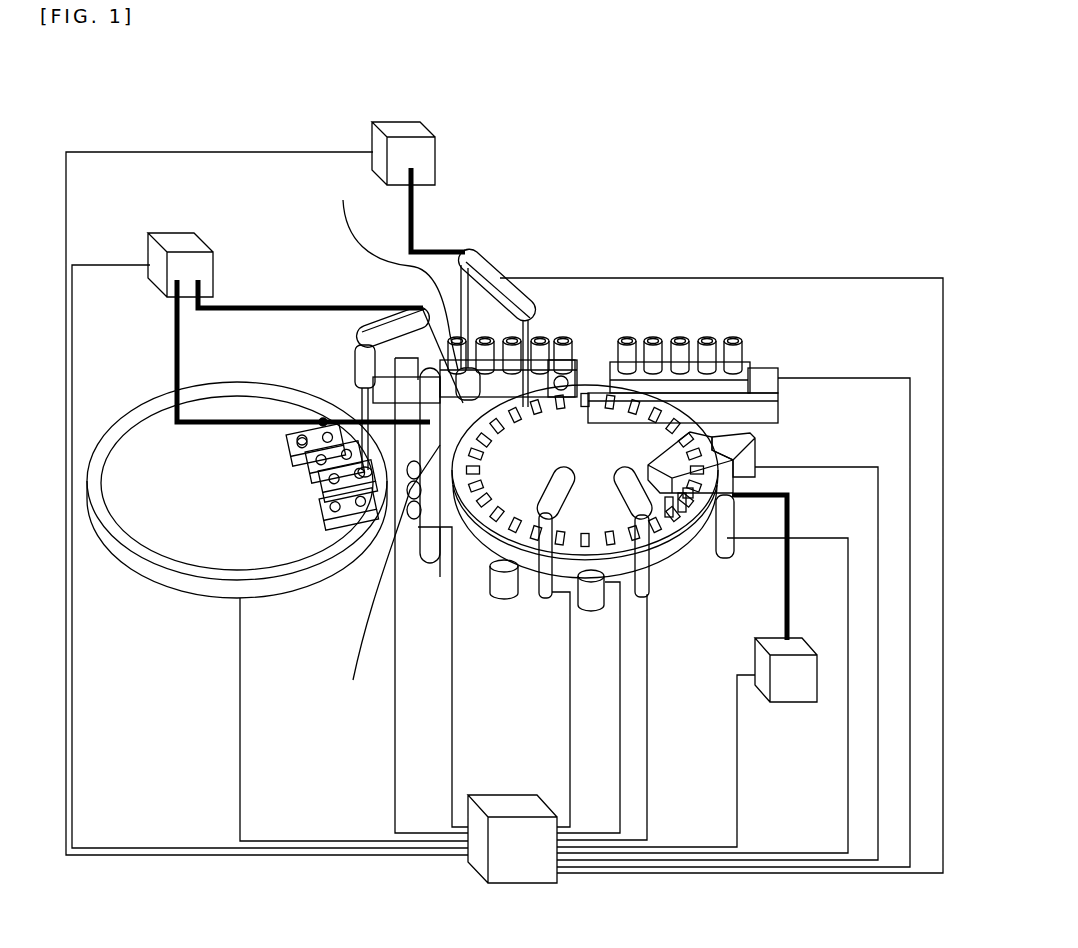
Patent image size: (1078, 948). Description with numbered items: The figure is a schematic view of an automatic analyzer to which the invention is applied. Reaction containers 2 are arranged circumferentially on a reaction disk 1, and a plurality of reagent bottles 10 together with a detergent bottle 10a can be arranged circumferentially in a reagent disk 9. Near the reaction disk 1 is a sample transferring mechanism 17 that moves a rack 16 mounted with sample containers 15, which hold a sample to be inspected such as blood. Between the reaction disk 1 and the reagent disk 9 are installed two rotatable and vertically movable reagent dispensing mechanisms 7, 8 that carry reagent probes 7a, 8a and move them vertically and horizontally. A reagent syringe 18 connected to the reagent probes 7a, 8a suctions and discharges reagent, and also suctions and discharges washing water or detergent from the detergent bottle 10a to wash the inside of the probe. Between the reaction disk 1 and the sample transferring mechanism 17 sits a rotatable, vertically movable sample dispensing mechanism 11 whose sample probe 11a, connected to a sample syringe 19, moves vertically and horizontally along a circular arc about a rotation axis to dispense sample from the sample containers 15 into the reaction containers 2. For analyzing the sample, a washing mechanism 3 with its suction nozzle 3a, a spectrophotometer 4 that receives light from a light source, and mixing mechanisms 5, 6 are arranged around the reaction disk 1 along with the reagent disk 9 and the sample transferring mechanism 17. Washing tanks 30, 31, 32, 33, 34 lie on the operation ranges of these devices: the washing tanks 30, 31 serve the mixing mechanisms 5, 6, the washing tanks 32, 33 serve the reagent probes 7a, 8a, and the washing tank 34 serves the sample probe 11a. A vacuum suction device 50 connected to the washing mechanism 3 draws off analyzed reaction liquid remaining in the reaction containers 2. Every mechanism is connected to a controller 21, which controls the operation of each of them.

The reaction disk 1 is at (478, 537).
The reaction container 2 is at (505, 520).
The washing mechanism 3 is at (730, 475).
The suction nozzle 3a is at (682, 512).
The spectrophotometer 4 is at (740, 453).
The mixing mechanism 5 is at (653, 587).
The mixing mechanism 6 is at (547, 590).
The reagent dispensing mechanism 7 is at (398, 275).
The reagent probe 7a is at (423, 310).
The reagent dispensing mechanism 8 is at (350, 340).
The reagent probe 8a is at (360, 397).
The reagent disk 9 is at (172, 393).
The reagent bottle 10 is at (323, 497).
The detergent bottle 10a is at (290, 440).
The sample dispensing mechanism 11 is at (495, 277).
The sample probe 11a is at (558, 370).
The sample container 15 is at (735, 362).
The rack 16 is at (735, 387).
The sample transferring mechanism 17 is at (760, 410).
The reagent syringe 18 is at (174, 244).
The sample syringe 19 is at (403, 128).
The controller 21 is at (520, 860).
The washing tank 30 is at (590, 583).
The washing tank 31 is at (503, 585).
The washing tank 32 is at (413, 530).
The washing tank 33 is at (353, 620).
The washing tank 34 is at (567, 377).
The vacuum suction device 50 is at (800, 688).